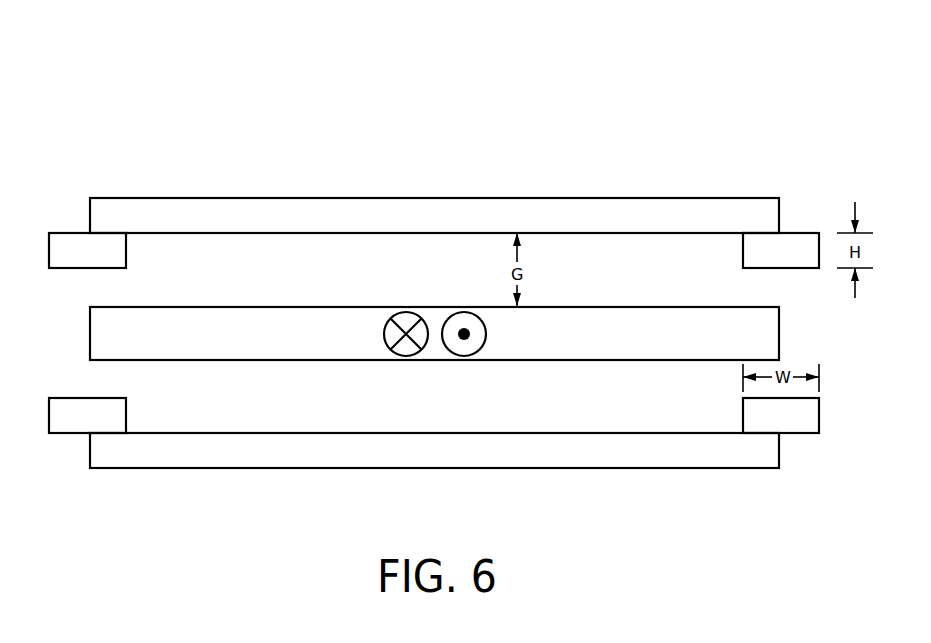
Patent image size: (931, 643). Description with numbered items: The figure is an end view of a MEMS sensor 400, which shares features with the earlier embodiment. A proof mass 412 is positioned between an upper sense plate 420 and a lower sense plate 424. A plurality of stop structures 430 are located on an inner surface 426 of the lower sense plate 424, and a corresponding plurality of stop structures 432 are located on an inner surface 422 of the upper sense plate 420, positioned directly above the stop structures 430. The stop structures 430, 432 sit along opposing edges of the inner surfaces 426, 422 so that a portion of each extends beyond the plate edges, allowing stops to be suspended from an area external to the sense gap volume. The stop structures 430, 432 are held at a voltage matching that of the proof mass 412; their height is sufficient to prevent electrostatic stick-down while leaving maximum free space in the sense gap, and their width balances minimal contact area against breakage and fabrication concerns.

The MEMS sensor 400 is at (563, 118).
The proof mass 412 is at (90, 344).
The upper sense plate 420 is at (90, 219).
The inner surface 422 is at (402, 233).
The lower sense plate 424 is at (90, 453).
The inner surface 426 is at (414, 433).
The stop structures 430 is at (126, 422).
The stop structures 432 is at (126, 250).